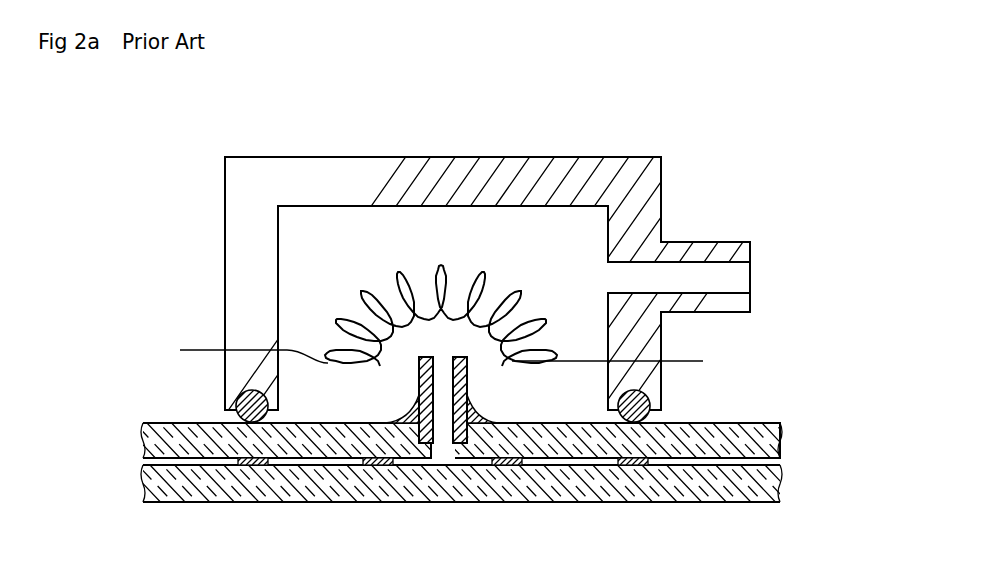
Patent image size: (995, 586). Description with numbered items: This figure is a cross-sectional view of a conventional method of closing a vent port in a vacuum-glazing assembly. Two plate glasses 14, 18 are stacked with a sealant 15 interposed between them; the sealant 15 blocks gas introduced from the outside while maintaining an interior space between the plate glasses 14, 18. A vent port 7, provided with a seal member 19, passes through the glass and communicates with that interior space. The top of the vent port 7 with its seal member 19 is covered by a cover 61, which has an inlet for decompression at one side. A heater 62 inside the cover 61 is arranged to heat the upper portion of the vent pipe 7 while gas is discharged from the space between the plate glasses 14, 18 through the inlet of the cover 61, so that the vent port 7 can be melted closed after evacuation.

The cover 61 is at (606, 150).
The heater 62 is at (421, 268).
The plate glass 18 is at (172, 433).
The plate glass 14 is at (548, 496).
The sealant 15 is at (262, 463).
The sealing member 19 is at (407, 418).
The vent port 7 is at (434, 418).